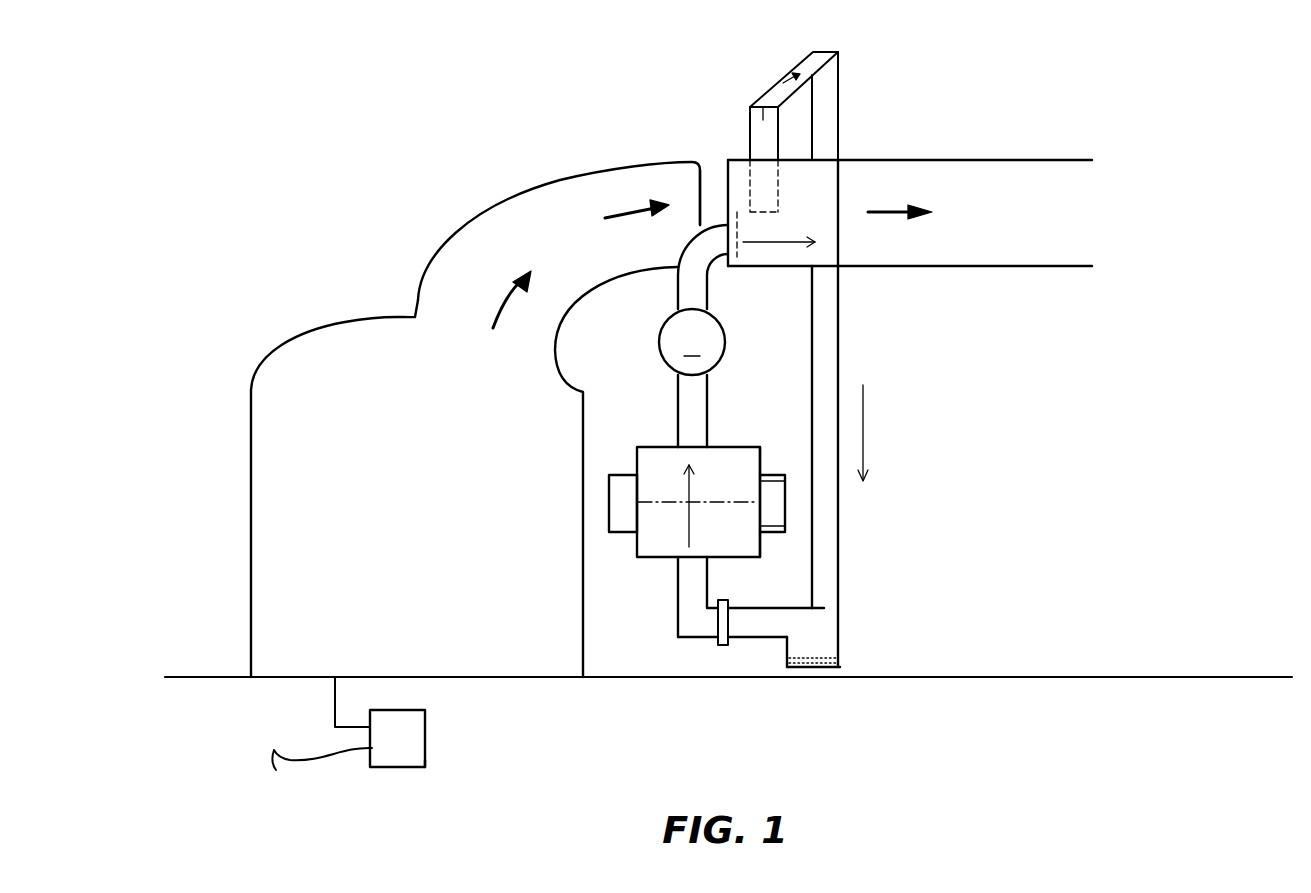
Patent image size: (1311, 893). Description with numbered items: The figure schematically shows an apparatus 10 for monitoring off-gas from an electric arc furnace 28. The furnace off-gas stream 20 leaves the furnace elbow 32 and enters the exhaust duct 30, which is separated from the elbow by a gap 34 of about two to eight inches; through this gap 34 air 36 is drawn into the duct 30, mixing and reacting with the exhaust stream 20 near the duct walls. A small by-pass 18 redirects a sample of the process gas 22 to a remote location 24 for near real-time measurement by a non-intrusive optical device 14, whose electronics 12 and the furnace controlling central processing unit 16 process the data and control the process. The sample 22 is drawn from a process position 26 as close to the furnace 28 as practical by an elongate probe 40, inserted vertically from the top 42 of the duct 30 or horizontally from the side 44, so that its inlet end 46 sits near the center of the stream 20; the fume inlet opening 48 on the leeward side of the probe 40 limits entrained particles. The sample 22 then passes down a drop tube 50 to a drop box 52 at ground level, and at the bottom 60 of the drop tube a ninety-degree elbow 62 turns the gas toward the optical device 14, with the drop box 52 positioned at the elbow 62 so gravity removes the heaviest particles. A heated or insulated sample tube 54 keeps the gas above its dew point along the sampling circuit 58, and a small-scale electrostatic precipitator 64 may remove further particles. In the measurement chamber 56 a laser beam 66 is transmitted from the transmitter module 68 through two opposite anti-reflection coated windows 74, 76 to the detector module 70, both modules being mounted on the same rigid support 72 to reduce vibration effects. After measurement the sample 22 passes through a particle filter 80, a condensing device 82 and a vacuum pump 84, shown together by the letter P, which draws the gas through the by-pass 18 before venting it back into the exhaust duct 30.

The apparatus 10 is at (195, 343).
The electronics 12 is at (385, 758).
The optical device 14 is at (425, 727).
The furnace controlling central processing unit 16 is at (415, 757).
The by-pass 18 is at (797, 65).
The furnace off-gas stream 20 is at (560, 242).
The sample of the process gas 22 is at (817, 55).
The remote location 24 is at (732, 553).
The process position 26 is at (756, 80).
The furnace 28 is at (290, 502).
The exhaust duct 30 is at (977, 158).
The furnace elbow 32 is at (474, 222).
The gap 34 is at (752, 220).
The air 36 is at (707, 180).
The elongate probe 40 is at (778, 182).
The top of the duct 42 is at (922, 158).
The side of the duct 44 is at (1072, 223).
The inlet end 46 is at (778, 212).
The fume inlet opening 48 is at (765, 214).
The drop tube 50 is at (842, 507).
The drop box 52 is at (842, 655).
The sample tube 54 is at (760, 641).
The measurement chamber 56 is at (665, 543).
The sampling circuit 58 is at (870, 417).
The bottom of the drop tube 60 is at (842, 610).
The 90° elbow 62 is at (823, 607).
The electrostatic precipitator 64 is at (723, 647).
The laser beam 66 is at (725, 500).
The transmitter module 68 is at (778, 475).
The detector module 70 is at (771, 533).
The rigid support 72 is at (753, 560).
The window 74 is at (637, 458).
The window 76 is at (760, 450).
The particle filter 80 is at (734, 378).
The condensing device 82 is at (734, 378).
The vacuum pump 84 is at (727, 334).